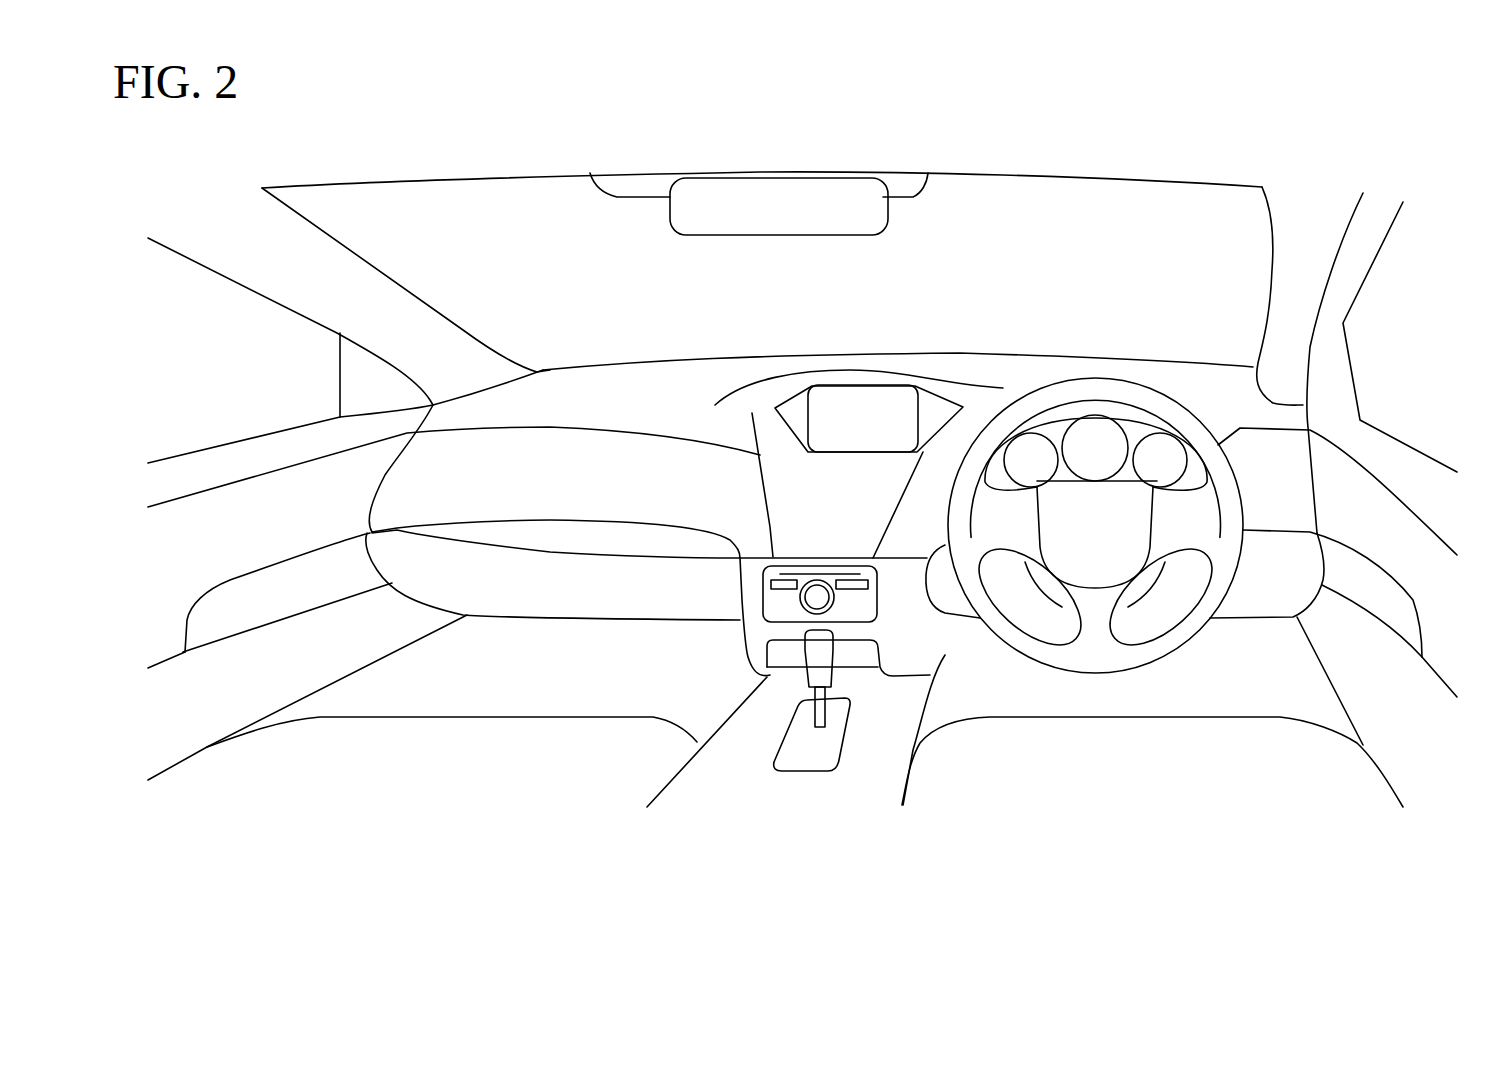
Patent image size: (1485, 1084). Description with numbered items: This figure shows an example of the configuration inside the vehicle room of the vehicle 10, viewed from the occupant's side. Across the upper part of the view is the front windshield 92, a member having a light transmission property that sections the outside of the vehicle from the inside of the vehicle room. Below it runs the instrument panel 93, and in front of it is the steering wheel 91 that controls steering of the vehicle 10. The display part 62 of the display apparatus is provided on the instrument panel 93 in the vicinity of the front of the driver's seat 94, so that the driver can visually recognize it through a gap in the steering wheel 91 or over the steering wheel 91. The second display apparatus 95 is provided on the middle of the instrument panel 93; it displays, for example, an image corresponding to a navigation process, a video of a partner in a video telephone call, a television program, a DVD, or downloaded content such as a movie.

The vehicle 10 is at (683, 680).
The display part 62 is at (1097, 440).
The steering wheel 91 is at (1183, 647).
The front windshield 92 is at (873, 303).
The instrument panel 93 is at (707, 395).
The driver's seat 94 is at (1155, 782).
The second display apparatus 95 is at (876, 433).